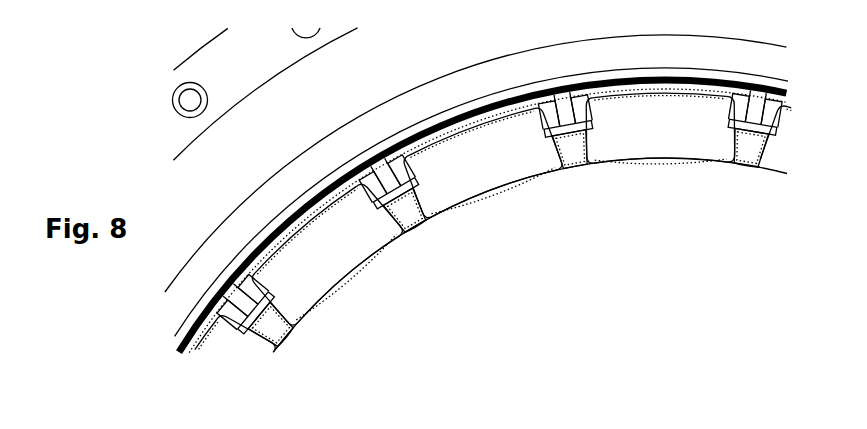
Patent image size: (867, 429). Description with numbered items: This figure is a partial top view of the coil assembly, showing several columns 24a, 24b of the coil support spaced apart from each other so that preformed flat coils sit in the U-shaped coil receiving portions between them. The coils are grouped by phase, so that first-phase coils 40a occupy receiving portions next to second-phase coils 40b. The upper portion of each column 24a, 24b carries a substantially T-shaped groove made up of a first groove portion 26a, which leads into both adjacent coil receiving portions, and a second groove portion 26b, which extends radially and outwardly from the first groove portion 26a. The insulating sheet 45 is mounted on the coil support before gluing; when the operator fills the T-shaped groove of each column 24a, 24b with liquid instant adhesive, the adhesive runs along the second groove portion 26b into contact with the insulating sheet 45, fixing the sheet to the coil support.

The column 24a is at (572, 177).
The column 24b is at (745, 167).
The first groove portion 26a is at (563, 133).
The second groove portion 26b is at (565, 103).
The first-phase coil 40a is at (633, 132).
The second-phase coil 40b is at (470, 167).
The insulating sheet 45 is at (540, 97).